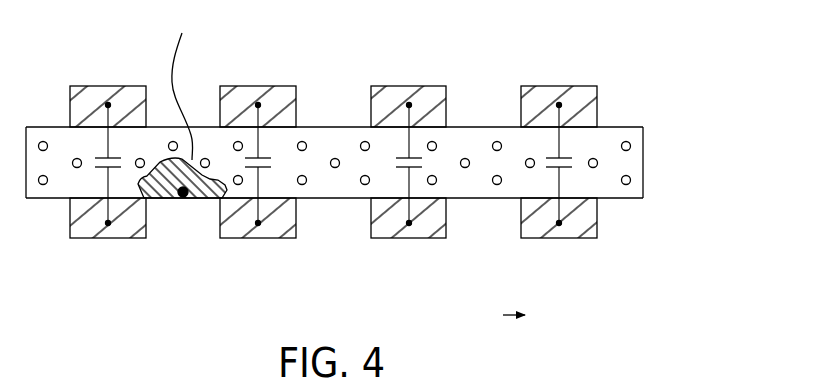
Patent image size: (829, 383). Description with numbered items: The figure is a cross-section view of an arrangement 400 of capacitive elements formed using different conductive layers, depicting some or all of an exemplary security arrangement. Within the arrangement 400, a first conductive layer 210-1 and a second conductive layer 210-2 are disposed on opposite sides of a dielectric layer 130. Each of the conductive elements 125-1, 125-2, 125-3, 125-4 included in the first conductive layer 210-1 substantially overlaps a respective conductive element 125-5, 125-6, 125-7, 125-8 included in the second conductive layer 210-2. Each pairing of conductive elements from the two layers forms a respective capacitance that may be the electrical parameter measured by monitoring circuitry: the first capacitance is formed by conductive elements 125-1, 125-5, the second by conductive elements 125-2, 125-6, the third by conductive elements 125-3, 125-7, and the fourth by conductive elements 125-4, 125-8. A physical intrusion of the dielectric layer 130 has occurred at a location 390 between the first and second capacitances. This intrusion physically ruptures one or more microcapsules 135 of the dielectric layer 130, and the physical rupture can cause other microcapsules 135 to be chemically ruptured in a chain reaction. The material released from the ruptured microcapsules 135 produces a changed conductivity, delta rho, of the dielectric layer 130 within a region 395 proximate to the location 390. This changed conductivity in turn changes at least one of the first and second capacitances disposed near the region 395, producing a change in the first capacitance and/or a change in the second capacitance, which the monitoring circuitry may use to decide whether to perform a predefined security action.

The conductive element 125-1 is at (108, 86).
The conductive element 125-2 is at (245, 86).
The conductive element 125-3 is at (403, 86).
The conductive element 125-4 is at (548, 86).
The conductive element 125-5 is at (112, 238).
The conductive element 125-6 is at (250, 238).
The conductive element 125-7 is at (407, 238).
The conductive element 125-8 is at (549, 238).
The dielectric layer 130 is at (398, 162).
The microcapsules 135 is at (643, 152).
The first conductive layer 210-1 is at (648, 114).
The second conductive layer 210-2 is at (648, 207).
The location 390 is at (183, 197).
The region 395 is at (184, 84).
The arrangement 400 is at (590, 50).